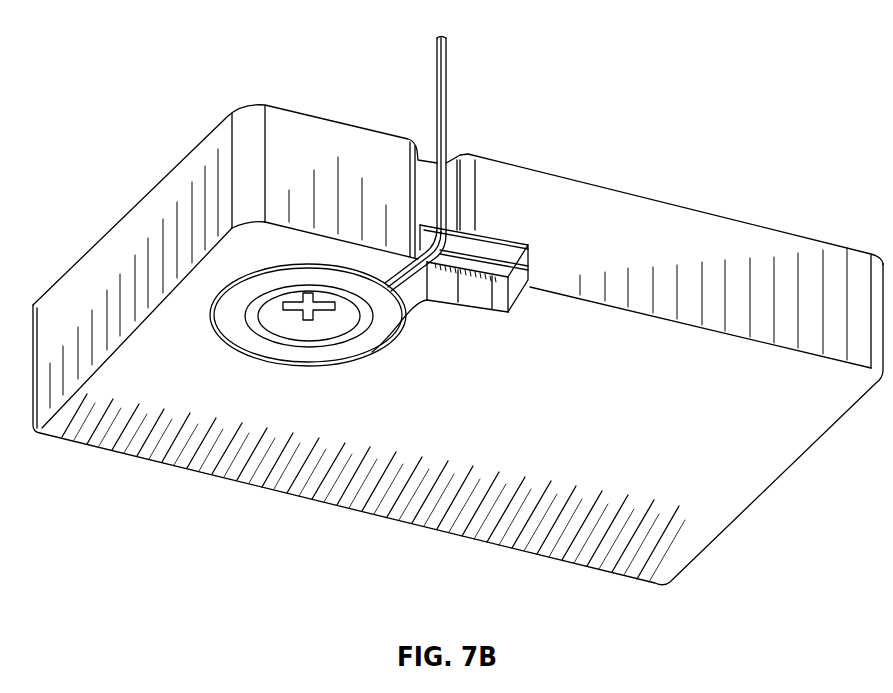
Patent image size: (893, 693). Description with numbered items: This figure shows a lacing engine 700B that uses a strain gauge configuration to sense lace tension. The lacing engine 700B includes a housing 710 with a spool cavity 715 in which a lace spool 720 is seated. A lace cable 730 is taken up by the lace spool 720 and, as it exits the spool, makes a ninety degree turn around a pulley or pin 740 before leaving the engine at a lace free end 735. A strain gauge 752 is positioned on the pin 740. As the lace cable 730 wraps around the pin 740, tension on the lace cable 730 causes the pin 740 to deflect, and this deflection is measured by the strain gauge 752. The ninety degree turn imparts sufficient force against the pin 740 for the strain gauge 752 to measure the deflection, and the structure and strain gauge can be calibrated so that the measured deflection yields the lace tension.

The lacing engine 700B is at (730, 101).
The housing 710 is at (94, 269).
The spool cavity 715 is at (387, 345).
The lace spool 720 is at (239, 337).
The lace cable 730 is at (437, 130).
The lace free end 735 is at (445, 40).
The pin 740 is at (518, 243).
The strain gauge 752 is at (473, 276).